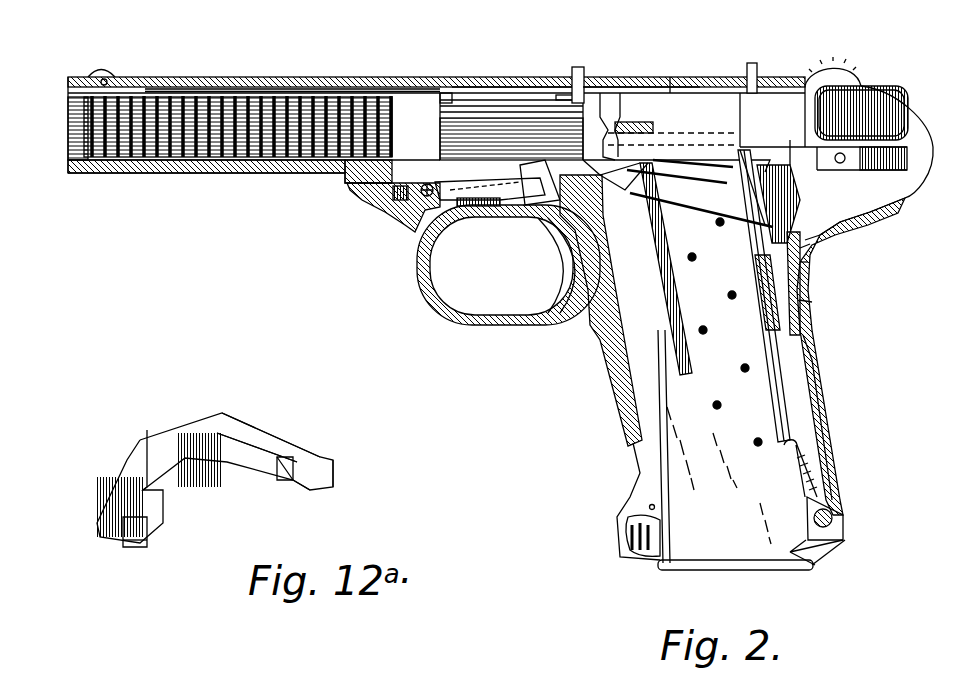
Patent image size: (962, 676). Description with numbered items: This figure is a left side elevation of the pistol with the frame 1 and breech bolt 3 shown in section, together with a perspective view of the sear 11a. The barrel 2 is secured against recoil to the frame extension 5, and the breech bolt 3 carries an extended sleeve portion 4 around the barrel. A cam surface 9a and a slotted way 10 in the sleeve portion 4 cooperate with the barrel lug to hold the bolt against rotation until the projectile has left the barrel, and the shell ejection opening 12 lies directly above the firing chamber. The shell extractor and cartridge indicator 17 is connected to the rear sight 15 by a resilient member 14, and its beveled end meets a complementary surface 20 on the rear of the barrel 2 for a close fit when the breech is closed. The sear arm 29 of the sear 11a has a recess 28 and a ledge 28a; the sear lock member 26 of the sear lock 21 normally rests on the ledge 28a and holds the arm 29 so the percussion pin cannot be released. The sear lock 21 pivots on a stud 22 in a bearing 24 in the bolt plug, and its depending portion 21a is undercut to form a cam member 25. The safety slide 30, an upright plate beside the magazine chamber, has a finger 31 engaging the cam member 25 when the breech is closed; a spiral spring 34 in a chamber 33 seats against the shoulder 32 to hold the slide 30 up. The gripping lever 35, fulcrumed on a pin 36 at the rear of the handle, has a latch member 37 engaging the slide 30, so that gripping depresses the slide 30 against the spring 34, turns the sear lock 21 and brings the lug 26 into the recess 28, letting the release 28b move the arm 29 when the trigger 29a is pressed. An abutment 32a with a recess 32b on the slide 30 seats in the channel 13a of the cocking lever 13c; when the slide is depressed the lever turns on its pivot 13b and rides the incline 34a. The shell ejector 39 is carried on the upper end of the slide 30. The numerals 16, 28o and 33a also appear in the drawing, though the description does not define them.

In FIG. 2, the frame 1 is at (607, 330).
In FIG. 2, the barrel 2 is at (517, 110).
In FIG. 2, the breech bolt 3 is at (715, 78).
In FIG. 2, the sleeve portion 4 is at (230, 77).
In FIG. 2, the frame extension 5 is at (417, 240).
In FIG. 2, the cam surface 9a is at (447, 96).
In FIG. 2, the slotted way 10 is at (343, 80).
In FIG. 2, the shell ejection opening 12 is at (503, 90).
In FIG. 2, the channel 13a is at (768, 206).
In FIG. 2, the pivot 13b is at (843, 157).
In FIG. 2, the cocking lever 13c is at (883, 160).
In FIG. 2, the resilient member 14 is at (627, 87).
In FIG. 2, the rear sight 15 is at (757, 70).
In FIG. 2, the slide joint 16 is at (671, 80).
In FIG. 2, the shell extractor and cartridge indicator 17 is at (578, 67).
In FIG. 2, the complementary surface 20 is at (570, 98).
In FIG. 2, the sear lock 21 is at (718, 142).
In FIG. 2, the depending portion 21a is at (807, 162).
In FIG. 2, the stud 22 is at (681, 140).
In FIG. 2, the bearing 24 is at (791, 140).
In FIG. 2, the cam member 25 is at (758, 160).
In FIG. 2, the sear lock member 26 is at (620, 140).
In FIG. 2, the recess 28 is at (647, 165).
In FIG. 12A, the recess 28 is at (125, 530).
In FIG. 2, the ledge 28a is at (612, 150).
In FIG. 2, the release 28b is at (532, 162).
In FIG. 12A, the sear lug 28o is at (130, 544).
In FIG. 2, the sear arm 29 is at (602, 117).
In FIG. 12A, the sear arm 29 is at (140, 458).
In FIG. 2, the trigger 29a is at (580, 233).
In FIG. 2, the safety slide 30 is at (757, 260).
In FIG. 2, the finger 31 is at (741, 150).
In FIG. 2, the shoulder 32 is at (802, 283).
In FIG. 2, the abutment 32a is at (812, 240).
In FIG. 2, the recess 32b is at (805, 263).
In FIG. 2, the chamber 33 is at (823, 323).
In FIG. 2, the back strap curve 33a is at (847, 212).
In FIG. 2, the spiral spring 34 is at (762, 293).
In FIG. 2, the incline 34a is at (767, 227).
In FIG. 2, the gripping lever 35 is at (802, 300).
In FIG. 2, the pin 36 is at (812, 360).
In FIG. 2, the latch member 37 is at (765, 367).
In FIG. 2, the shell ejector 39 is at (805, 246).
In FIG. 12A, the sear 11a is at (287, 453).